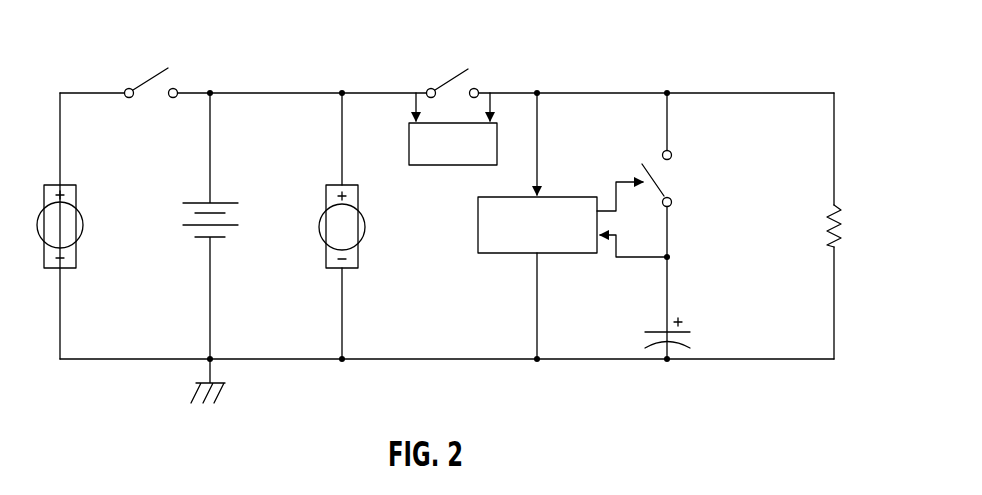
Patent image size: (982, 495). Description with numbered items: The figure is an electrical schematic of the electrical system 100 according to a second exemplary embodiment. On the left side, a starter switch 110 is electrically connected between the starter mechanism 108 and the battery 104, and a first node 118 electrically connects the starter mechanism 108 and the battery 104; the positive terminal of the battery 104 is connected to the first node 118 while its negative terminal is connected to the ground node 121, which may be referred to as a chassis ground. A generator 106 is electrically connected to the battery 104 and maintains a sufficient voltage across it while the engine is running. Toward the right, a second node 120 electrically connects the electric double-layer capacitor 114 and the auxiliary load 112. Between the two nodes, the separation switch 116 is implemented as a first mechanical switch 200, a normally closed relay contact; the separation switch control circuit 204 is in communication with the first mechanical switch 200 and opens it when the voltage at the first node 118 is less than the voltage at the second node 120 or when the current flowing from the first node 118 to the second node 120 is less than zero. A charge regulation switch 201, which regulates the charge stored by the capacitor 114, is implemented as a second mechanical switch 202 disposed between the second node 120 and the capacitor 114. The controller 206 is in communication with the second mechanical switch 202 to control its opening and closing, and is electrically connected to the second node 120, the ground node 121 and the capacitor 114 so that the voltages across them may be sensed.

The electrical system 100 is at (792, 57).
The battery 104 is at (222, 202).
The generator 106 is at (320, 227).
The starter mechanism 108 is at (83, 226).
The starter switch 110 is at (150, 74).
The auxiliary load 112 is at (828, 228).
The electric double-layer capacitor 114 is at (655, 331).
The separation switch 116 is at (482, 68).
The first node 118 is at (293, 92).
The second node 120 is at (700, 92).
The ground node 121 is at (270, 360).
The first mechanical switch 200 is at (455, 74).
The charge regulation switch 201 is at (689, 150).
The second mechanical switch 202 is at (655, 183).
The separation switch control circuit 204 is at (440, 166).
The controller 206 is at (497, 254).